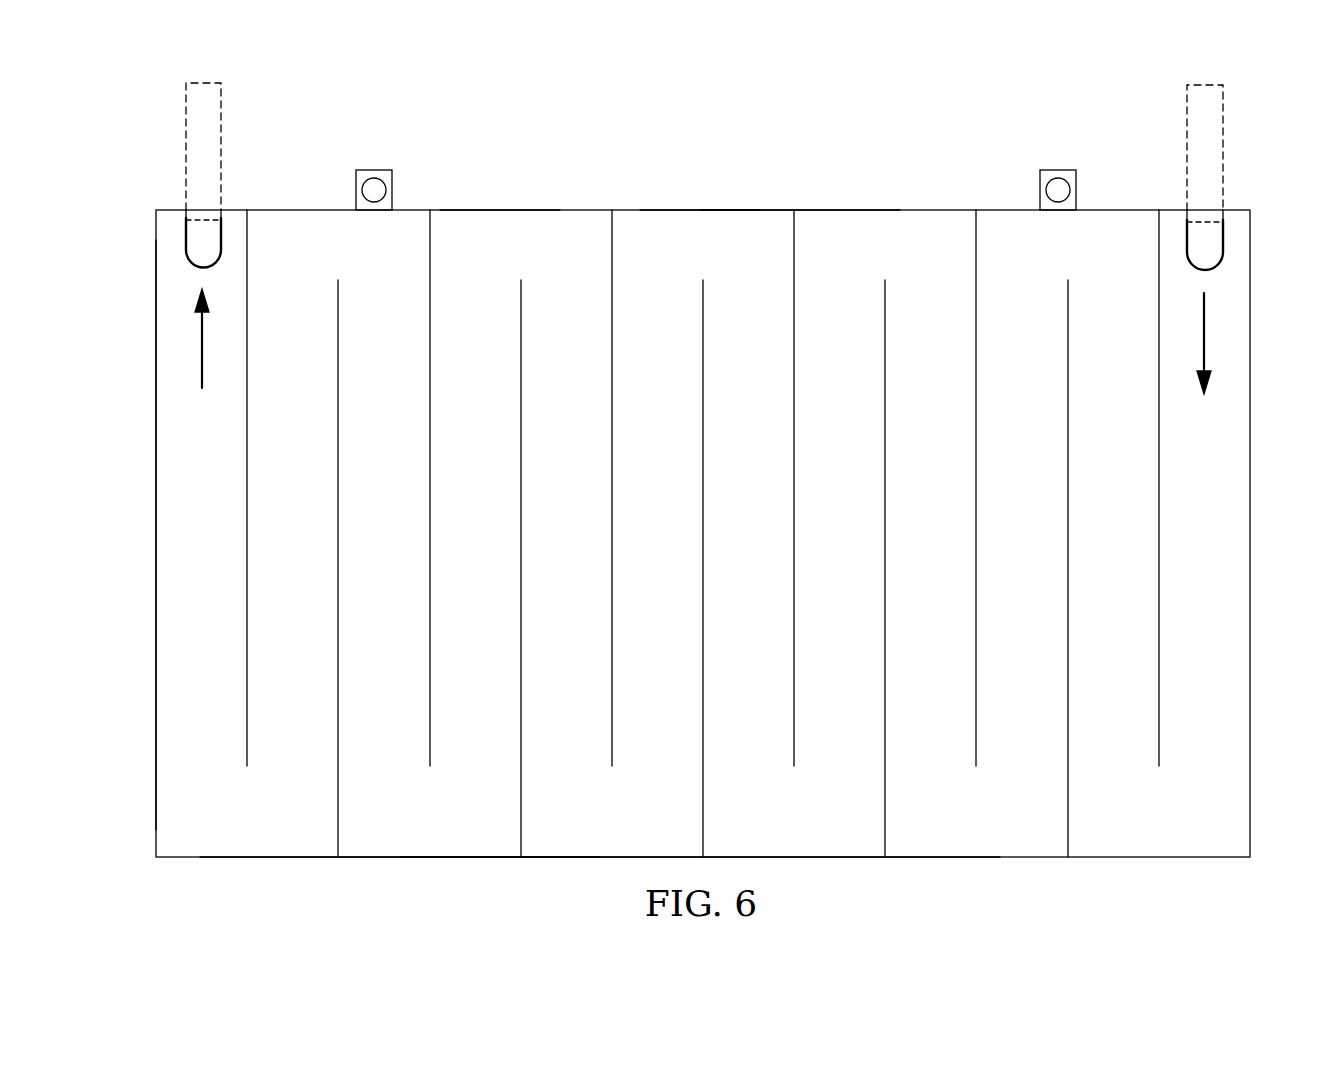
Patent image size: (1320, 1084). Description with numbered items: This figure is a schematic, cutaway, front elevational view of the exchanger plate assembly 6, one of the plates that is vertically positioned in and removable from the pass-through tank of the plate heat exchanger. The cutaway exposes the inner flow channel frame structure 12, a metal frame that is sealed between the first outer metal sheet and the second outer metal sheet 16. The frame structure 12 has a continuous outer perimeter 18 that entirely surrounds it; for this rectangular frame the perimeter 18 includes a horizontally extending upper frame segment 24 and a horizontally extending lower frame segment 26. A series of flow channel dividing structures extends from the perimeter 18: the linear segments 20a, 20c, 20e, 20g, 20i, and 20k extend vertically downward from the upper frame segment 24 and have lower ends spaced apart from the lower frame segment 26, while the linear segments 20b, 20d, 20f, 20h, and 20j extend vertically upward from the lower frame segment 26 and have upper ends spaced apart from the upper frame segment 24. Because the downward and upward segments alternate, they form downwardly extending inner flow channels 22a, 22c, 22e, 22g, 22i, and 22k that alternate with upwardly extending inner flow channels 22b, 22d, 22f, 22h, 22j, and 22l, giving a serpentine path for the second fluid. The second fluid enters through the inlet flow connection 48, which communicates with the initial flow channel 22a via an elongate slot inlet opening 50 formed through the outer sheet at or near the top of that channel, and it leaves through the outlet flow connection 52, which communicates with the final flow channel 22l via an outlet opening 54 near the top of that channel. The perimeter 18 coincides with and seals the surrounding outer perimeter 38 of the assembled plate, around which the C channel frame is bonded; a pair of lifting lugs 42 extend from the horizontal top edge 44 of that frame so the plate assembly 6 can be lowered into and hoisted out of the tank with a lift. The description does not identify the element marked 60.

The exchanger plate assembly 6 is at (587, 143).
The inner flow channel frame structure 12 is at (843, 208).
The second outer metal sheet 16 is at (768, 220).
The continuous outer perimeter 18 is at (155, 655).
The upper frame segment 24 is at (705, 208).
The lower frame segment 26 is at (850, 860).
The outer perimeter 38 is at (397, 858).
The lifting lugs 42 is at (363, 168).
The horizontal top edge 44 is at (507, 208).
The inlet flow connection 48 is at (1223, 170).
The inlet opening 50 is at (1223, 240).
The outlet flow connection 52 is at (185, 167).
The outlet opening 54 is at (183, 233).
The fluid conduit 60 is at (185, 112).
The flow channel dividing structure 20a is at (1158, 427).
The flow channel dividing structure 20b is at (1067, 522).
The flow channel dividing structure 20c is at (975, 642).
The flow channel dividing structure 20d is at (884, 336).
The flow channel dividing structure 20e is at (793, 462).
The flow channel dividing structure 20f is at (702, 566).
The flow channel dividing structure 20g is at (611, 688).
The flow channel dividing structure 20h is at (520, 342).
The flow channel dividing structure 20i is at (429, 422).
The flow channel dividing structure 20j is at (337, 490).
The flow channel dividing structure 20k is at (245, 562).
The initial flow channel 22a is at (1182, 552).
The inner flow channel 22b is at (1091, 620).
The inner flow channel 22c is at (1003, 484).
The inner flow channel 22d is at (911, 484).
The inner flow channel 22e is at (819, 552).
The inner flow channel 22f is at (729, 620).
The inner flow channel 22g is at (636, 411).
The inner flow channel 22h is at (548, 481).
The inner flow channel 22i is at (460, 481).
The inner flow channel 22j is at (368, 547).
The inner flow channel 22k is at (271, 620).
The final flow channel 22l is at (184, 481).